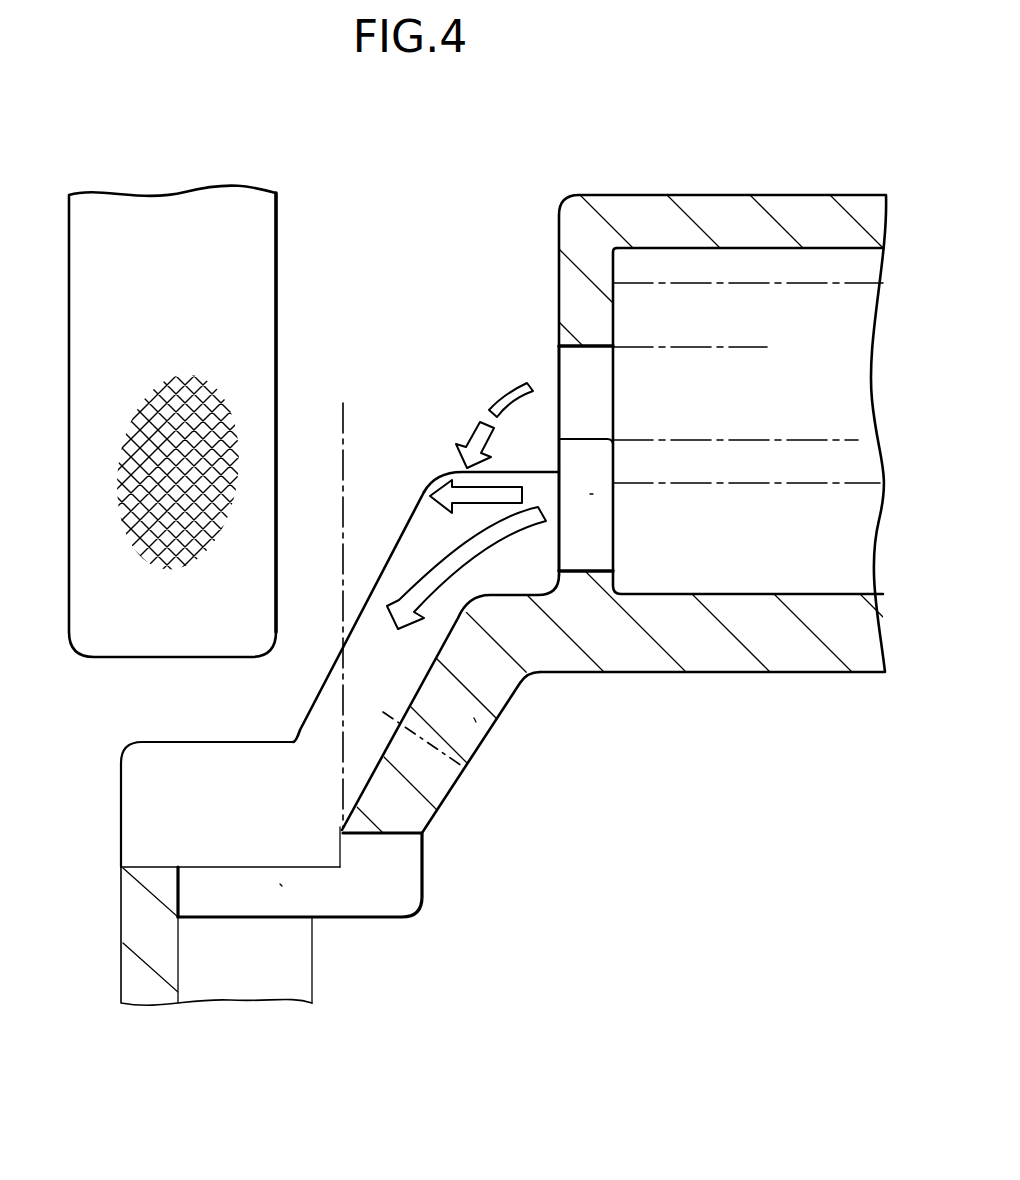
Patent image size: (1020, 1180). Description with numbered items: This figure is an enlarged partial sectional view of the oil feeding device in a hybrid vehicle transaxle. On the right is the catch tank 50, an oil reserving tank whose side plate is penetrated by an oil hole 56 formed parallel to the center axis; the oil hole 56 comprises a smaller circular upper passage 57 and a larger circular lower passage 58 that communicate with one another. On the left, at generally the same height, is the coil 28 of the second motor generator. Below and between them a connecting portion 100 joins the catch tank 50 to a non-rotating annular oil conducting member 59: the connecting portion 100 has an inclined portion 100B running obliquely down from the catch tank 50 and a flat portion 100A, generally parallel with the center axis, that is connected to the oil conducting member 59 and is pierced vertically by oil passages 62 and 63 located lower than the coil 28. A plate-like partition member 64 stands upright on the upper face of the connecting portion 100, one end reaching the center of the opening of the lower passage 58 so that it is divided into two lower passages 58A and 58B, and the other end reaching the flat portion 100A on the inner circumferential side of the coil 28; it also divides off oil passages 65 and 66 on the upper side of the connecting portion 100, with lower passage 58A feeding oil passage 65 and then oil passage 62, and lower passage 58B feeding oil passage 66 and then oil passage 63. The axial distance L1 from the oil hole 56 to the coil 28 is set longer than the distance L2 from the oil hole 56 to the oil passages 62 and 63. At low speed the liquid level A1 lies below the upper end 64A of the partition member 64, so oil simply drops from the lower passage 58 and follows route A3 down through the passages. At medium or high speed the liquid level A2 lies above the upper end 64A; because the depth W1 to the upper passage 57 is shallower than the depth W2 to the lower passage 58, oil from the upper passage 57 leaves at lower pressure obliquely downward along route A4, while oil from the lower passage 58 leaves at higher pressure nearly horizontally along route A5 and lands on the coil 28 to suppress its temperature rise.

The coil 28 is at (281, 206).
The catch tank 50 is at (758, 194).
The oil hole 56 is at (617, 390).
The upper passage 57 is at (558, 355).
The lower passage 58 is at (617, 522).
The lower passage 58A is at (598, 538).
The lower passage 58B is at (591, 494).
The oil conducting member 59 is at (126, 968).
The oil passage 62 is at (206, 887).
The oil passage 63 is at (281, 885).
The partition member 64 is at (240, 741).
The upper end 64A is at (528, 470).
The oil passage 65 is at (313, 750).
The oil passage 66 is at (463, 768).
The connecting portion 100 is at (449, 793).
The flat portion 100A is at (243, 921).
The inclined portion 100B is at (475, 720).
The liquid level A1 is at (712, 483).
The liquid level A2 is at (705, 283).
The route A3 is at (466, 568).
The route A4 is at (494, 425).
The route A5 is at (462, 508).
The distance L1 is at (278, 370).
The distance L2 is at (558, 420).
The depth W1 is at (761, 284).
The depth W2 is at (816, 284).